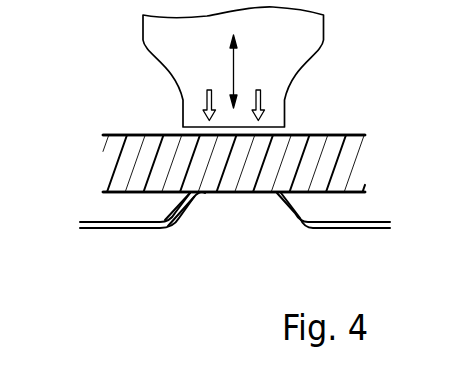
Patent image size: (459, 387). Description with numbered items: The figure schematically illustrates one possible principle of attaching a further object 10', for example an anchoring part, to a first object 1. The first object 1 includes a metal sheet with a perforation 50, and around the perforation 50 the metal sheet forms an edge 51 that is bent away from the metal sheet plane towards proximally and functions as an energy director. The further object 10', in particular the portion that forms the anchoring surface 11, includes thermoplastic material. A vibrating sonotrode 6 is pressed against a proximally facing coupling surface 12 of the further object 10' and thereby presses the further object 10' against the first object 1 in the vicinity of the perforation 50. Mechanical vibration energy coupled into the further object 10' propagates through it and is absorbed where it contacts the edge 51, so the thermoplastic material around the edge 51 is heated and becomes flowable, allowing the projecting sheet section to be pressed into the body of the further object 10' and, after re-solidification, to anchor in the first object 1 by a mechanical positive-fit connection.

The vibrating sonotrode 6 is at (283, 37).
The coupling surface 12 is at (165, 134).
The further object 10' is at (272, 163).
The anchoring surface 11 is at (150, 203).
The first object 1 is at (110, 229).
The edge 51 is at (200, 197).
The perforation 50 is at (233, 200).